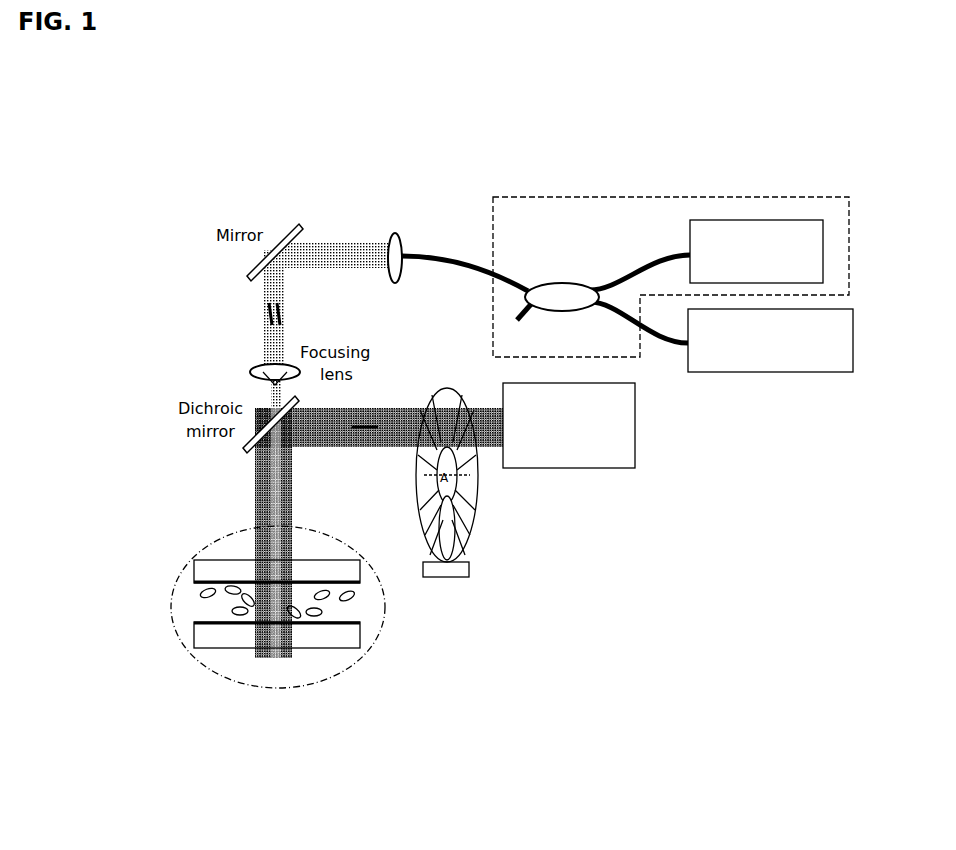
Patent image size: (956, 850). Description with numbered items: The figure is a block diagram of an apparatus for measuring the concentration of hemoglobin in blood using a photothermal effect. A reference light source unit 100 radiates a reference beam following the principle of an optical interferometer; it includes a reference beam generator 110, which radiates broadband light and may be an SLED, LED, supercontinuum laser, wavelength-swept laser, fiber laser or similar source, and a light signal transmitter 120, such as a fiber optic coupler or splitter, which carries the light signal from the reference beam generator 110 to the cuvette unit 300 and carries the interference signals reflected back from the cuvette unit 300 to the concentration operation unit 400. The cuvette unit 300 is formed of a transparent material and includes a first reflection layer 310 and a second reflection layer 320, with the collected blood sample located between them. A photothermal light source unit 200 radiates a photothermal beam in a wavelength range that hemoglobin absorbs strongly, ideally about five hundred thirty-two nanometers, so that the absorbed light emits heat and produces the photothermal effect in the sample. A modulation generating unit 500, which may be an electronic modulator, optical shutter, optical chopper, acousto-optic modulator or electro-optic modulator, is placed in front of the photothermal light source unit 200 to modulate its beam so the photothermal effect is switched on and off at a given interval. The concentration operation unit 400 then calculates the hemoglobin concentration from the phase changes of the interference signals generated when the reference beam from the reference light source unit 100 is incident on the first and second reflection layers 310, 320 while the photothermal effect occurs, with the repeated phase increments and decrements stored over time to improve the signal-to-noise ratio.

The reference light source unit 100 is at (583, 197).
The reference beam generator 110 is at (770, 220).
The light signal transmitter 120 is at (558, 282).
The photothermal light source unit 200 is at (585, 470).
The cuvette unit 300 is at (172, 600).
The first reflection layer 310 is at (226, 622).
The second reflection layer 320 is at (226, 622).
The concentration operation unit 400 is at (770, 372).
The modulation generating unit 500 is at (440, 578).